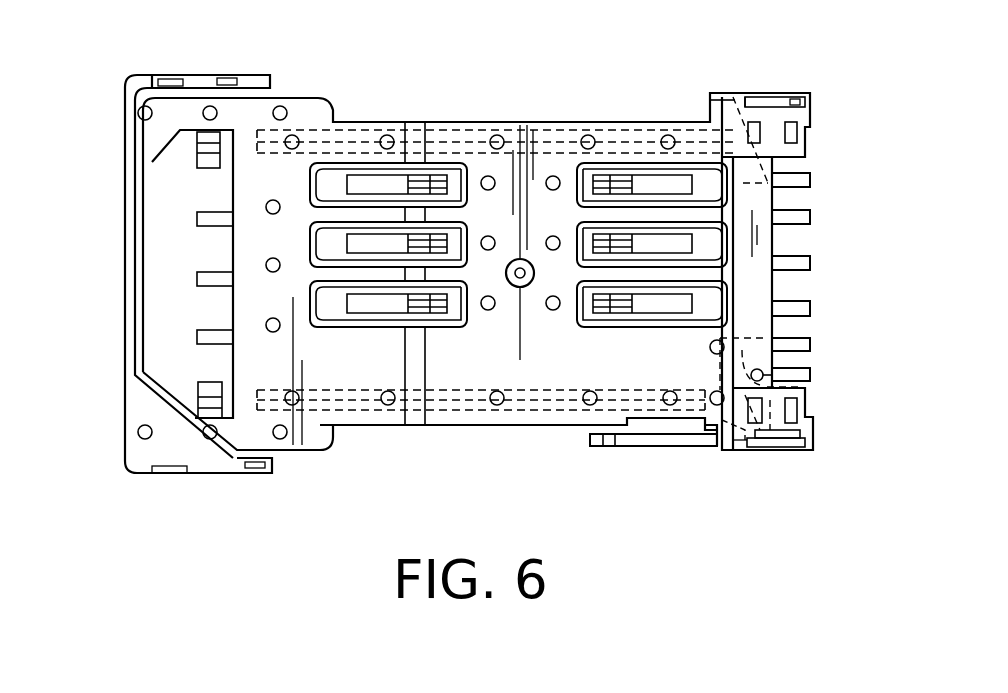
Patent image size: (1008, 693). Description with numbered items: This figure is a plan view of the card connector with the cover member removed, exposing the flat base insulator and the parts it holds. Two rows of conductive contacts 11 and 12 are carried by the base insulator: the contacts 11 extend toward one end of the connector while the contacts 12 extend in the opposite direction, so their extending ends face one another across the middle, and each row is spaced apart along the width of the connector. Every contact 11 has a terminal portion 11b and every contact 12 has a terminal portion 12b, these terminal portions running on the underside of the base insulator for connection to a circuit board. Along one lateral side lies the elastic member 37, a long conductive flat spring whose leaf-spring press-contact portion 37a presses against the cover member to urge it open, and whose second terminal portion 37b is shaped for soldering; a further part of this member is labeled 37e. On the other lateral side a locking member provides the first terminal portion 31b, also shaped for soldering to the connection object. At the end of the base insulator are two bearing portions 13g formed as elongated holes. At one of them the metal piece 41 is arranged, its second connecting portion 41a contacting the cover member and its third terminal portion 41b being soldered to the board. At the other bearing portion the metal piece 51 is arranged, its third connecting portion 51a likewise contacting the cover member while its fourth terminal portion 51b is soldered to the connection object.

The conductive contact 11 is at (647, 165).
The conductive contact 12 is at (437, 163).
The terminal portion 11b is at (812, 215).
The terminal portion 12b is at (197, 218).
The first terminal portion 31b is at (197, 395).
The metal piece 51 is at (712, 100).
The third connecting portion 51a is at (755, 97).
The fourth terminal portion 51b is at (812, 177).
The bearing portion 13g is at (752, 97).
The elastic member 37 is at (660, 447).
The press-contact portion 37a is at (606, 447).
The second terminal portion 37b is at (812, 345).
The fixing portion of latch member 37e is at (750, 450).
The metal piece 41 is at (803, 387).
The second connecting portion 41a is at (812, 440).
The third terminal portion 41b is at (812, 376).